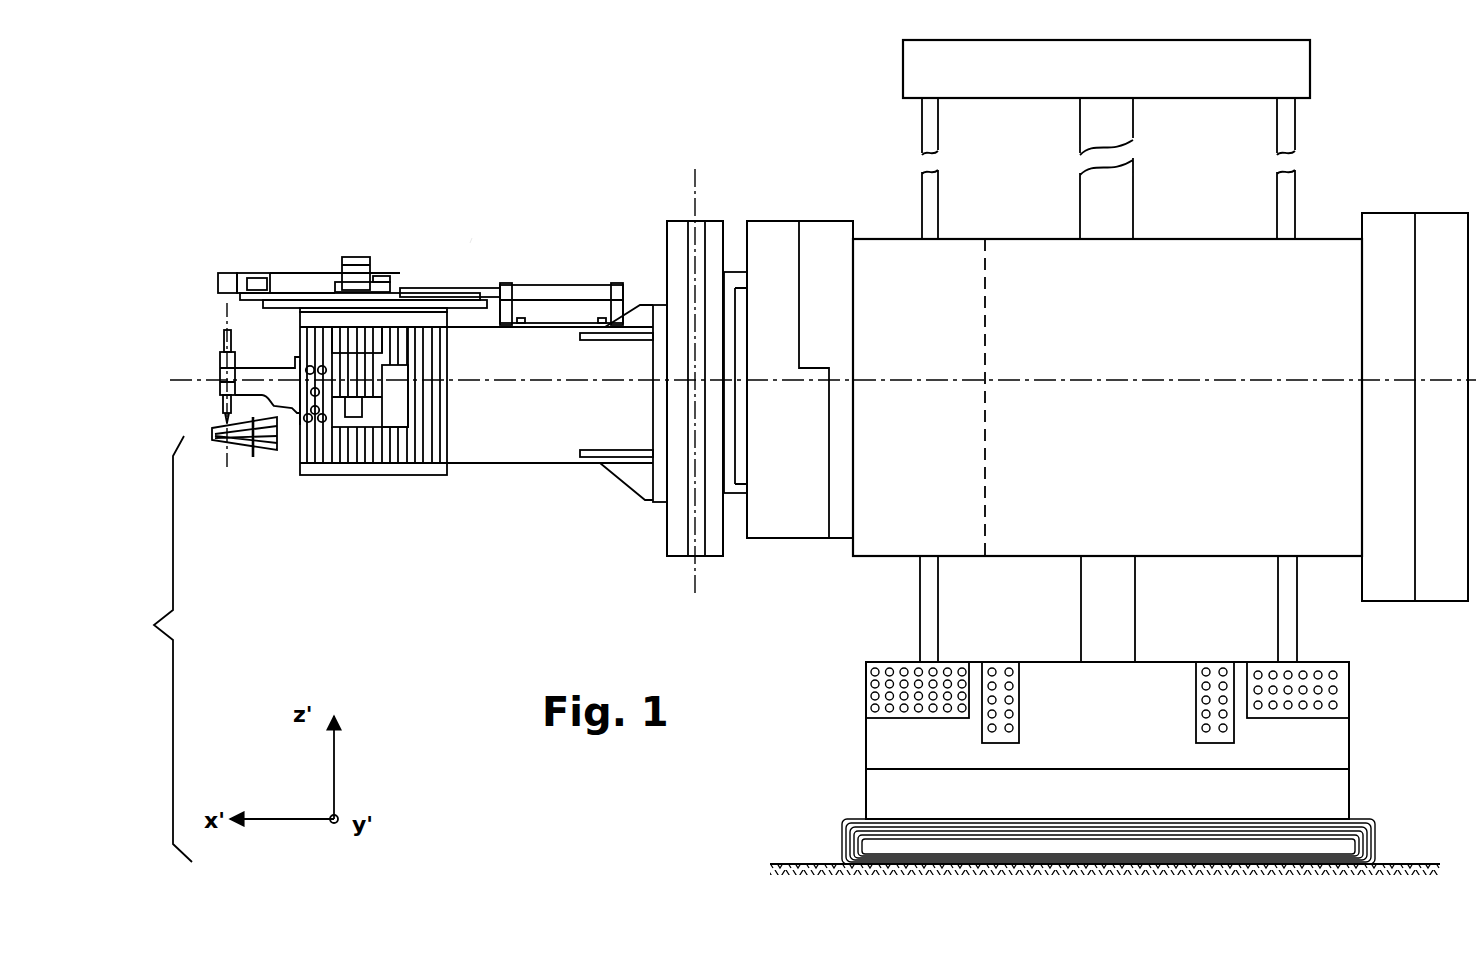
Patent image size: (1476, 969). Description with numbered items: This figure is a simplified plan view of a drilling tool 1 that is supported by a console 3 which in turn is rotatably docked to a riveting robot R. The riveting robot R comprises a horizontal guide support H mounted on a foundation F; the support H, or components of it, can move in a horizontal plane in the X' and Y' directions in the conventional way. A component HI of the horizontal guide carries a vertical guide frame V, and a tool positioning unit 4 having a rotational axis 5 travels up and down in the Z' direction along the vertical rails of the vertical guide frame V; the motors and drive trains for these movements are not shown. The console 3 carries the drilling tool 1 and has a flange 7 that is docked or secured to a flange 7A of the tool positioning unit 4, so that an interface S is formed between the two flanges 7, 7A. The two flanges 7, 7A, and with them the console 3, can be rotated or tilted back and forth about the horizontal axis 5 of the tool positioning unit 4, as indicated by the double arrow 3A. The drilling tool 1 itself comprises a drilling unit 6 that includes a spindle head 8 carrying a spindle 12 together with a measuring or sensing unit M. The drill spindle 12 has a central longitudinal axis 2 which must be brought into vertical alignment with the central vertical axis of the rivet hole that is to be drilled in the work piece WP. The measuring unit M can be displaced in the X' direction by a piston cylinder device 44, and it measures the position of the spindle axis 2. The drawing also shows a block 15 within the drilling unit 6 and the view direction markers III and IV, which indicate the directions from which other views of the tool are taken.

The drilling tool 1 is at (471, 242).
The central longitudinal axis 2 is at (224, 466).
The console 3 is at (531, 448).
The double arrow 3A is at (580, 372).
The tool positioning unit 4 is at (1238, 343).
The rotational axis 5 is at (208, 356).
The drilling unit 6 is at (357, 496).
The flange 7 is at (673, 222).
The flange of the tool positioning unit 7A is at (718, 222).
The spindle head 8 is at (292, 402).
The spindle 12 is at (232, 344).
The tool head block 15 is at (397, 405).
The piston cylinder device 44 is at (553, 297).
The measuring unit M is at (256, 282).
The interface S is at (702, 176).
The riveting robot R is at (870, 126).
The vertical guide frame V is at (1288, 128).
The horizontal guide support H is at (1340, 796).
The component of the horizontal guide HI is at (1330, 740).
The foundation F is at (1393, 864).
The work piece WP is at (253, 458).
The view direction III is at (385, 218).
The view direction IV is at (208, 404).